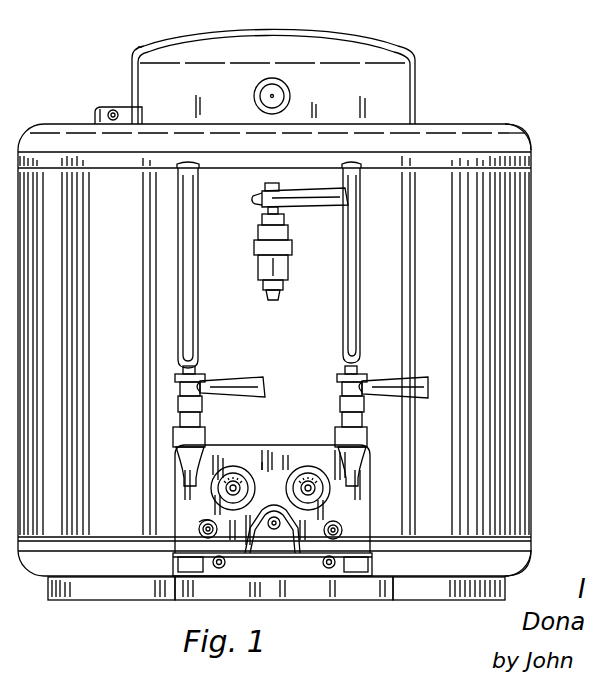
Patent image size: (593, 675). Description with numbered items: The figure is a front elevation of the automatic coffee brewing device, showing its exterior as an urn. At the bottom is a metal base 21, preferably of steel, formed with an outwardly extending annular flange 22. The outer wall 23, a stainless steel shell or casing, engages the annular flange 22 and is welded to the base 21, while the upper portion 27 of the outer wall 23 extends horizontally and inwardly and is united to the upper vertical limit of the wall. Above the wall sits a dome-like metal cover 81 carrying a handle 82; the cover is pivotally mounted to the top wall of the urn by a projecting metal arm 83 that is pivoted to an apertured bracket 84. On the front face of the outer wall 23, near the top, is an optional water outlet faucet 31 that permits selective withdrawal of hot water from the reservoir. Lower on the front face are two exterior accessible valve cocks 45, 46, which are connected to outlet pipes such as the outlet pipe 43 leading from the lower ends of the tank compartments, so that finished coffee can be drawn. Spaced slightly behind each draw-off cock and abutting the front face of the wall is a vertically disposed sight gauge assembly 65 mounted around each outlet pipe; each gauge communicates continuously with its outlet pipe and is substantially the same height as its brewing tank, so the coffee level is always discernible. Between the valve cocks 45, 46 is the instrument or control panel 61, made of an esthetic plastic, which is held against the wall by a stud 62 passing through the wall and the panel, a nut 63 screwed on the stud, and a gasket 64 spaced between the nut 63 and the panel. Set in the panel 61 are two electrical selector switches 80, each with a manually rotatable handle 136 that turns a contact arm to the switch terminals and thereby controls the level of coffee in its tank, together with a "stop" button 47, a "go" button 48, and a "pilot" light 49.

The metal base 21 is at (516, 592).
The annular flange 22 is at (522, 572).
The outer wall 23 is at (530, 297).
The upper portion 27 is at (530, 136).
The water outlet faucet 31 is at (290, 273).
The outlet pipe 43 is at (150, 8).
The valve cock 45 is at (173, 436).
The valve cock 46 is at (372, 446).
The stop button 47 is at (212, 570).
The go button 48 is at (330, 570).
The pilot light 49 is at (270, 550).
The control panel 61 is at (283, 465).
The stud 62 is at (347, 532).
The nut 63 is at (202, 524).
The gasket 64 is at (199, 532).
The sight gauge assembly 65 is at (183, 250).
The selector switch 80 is at (243, 482).
The dome-like cover 81 is at (395, 92).
The handle 82 is at (258, 88).
The arm 83 is at (130, 110).
The bracket 84 is at (95, 118).
The rotatable handle 136 is at (262, 462).